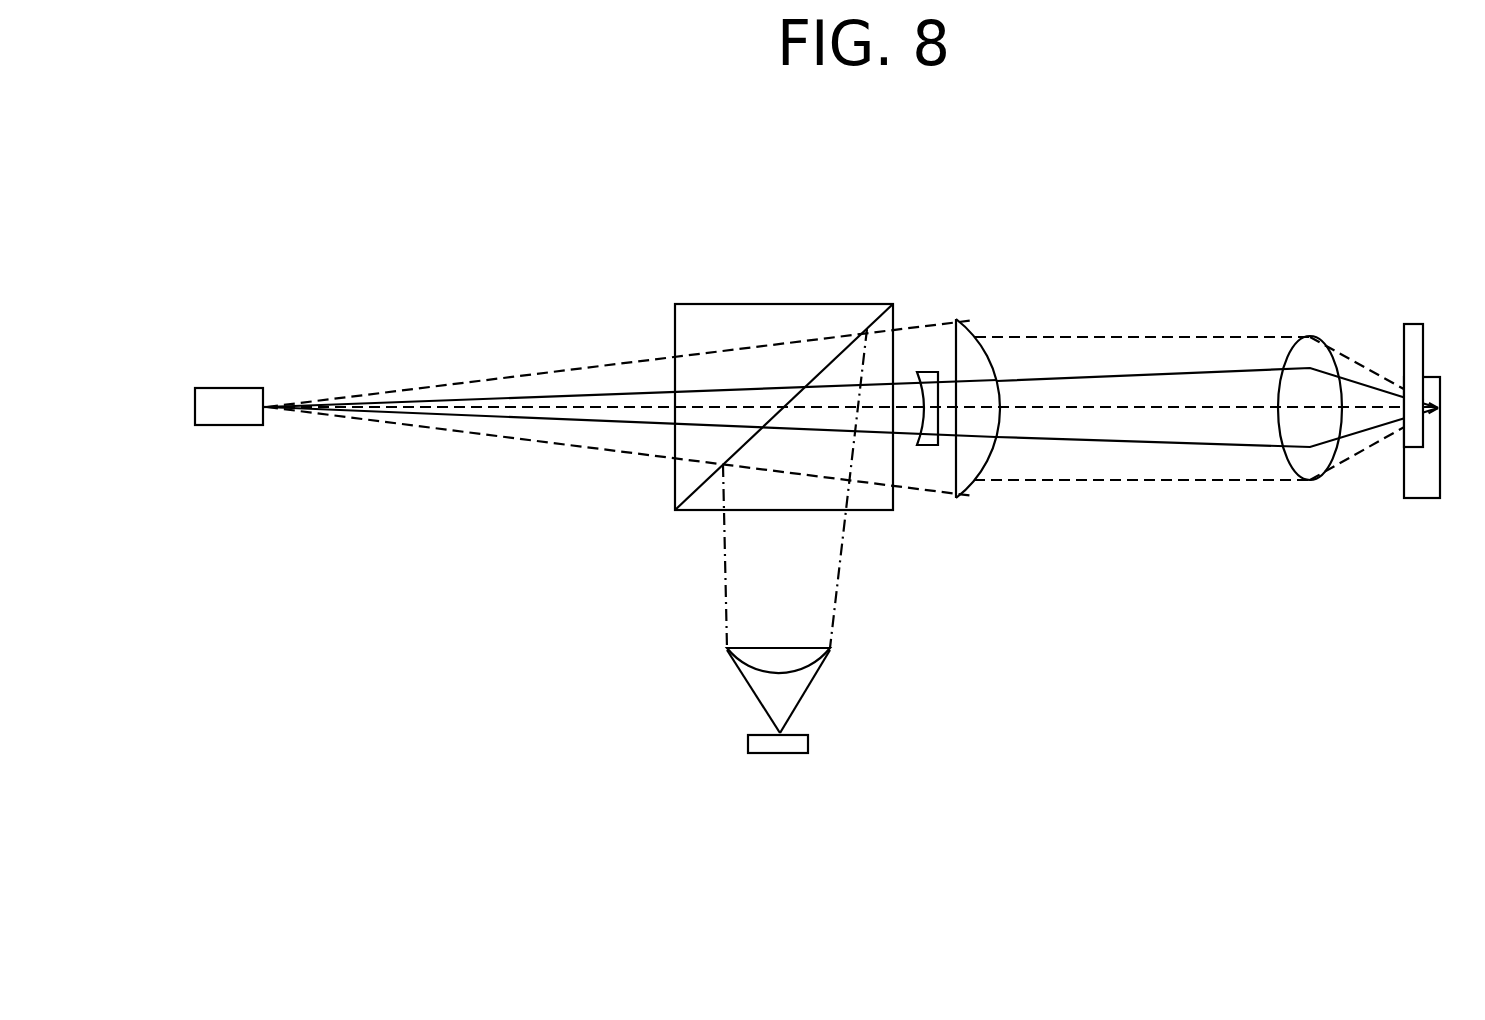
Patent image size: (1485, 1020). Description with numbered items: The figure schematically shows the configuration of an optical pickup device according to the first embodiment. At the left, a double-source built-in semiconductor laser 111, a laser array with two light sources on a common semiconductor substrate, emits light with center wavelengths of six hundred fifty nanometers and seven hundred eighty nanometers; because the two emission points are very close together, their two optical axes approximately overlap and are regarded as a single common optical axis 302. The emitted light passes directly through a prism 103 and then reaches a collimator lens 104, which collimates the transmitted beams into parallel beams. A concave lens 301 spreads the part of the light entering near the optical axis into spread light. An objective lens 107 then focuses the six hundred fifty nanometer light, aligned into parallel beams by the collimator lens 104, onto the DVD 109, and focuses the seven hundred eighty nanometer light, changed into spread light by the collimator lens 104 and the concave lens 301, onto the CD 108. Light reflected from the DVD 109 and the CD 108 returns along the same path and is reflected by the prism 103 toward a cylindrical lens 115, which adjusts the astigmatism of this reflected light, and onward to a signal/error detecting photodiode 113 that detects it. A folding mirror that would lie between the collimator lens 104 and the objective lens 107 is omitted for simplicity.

The double-source built-in semiconductor laser 111 is at (232, 398).
The prism 103 is at (683, 490).
The concave lens 301 is at (923, 368).
The collimator lens 104 is at (965, 478).
The common optical axis 302 is at (1123, 407).
The objective lens 107 is at (1308, 477).
The CD 108 is at (1420, 493).
The DVD 109 is at (1415, 348).
The cylindrical lens 115 is at (803, 657).
The signal/error detecting photodiode 113 is at (808, 745).